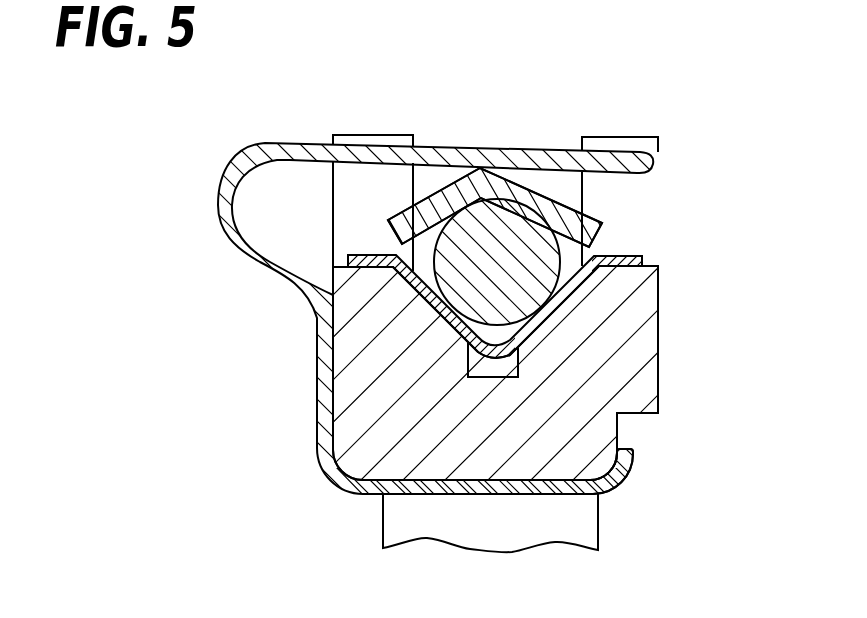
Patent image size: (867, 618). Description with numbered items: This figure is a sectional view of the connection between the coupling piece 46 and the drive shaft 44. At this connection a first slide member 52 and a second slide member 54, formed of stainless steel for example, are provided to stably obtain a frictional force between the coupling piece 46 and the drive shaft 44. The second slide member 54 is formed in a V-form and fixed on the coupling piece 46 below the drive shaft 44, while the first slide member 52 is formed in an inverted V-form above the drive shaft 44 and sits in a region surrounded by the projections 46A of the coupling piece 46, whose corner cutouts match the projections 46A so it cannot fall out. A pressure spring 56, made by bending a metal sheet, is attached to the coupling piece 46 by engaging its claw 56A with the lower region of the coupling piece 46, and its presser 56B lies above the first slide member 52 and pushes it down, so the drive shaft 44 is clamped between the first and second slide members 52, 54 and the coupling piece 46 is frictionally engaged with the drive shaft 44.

The drive shaft 44 is at (482, 222).
The coupling piece 46 is at (373, 377).
The projection 46A is at (375, 135).
The first slide member 52 is at (533, 192).
The second slide member 54 is at (627, 258).
The pressure spring 56 is at (274, 141).
The claw 56A is at (634, 452).
The presser 56B is at (483, 197).